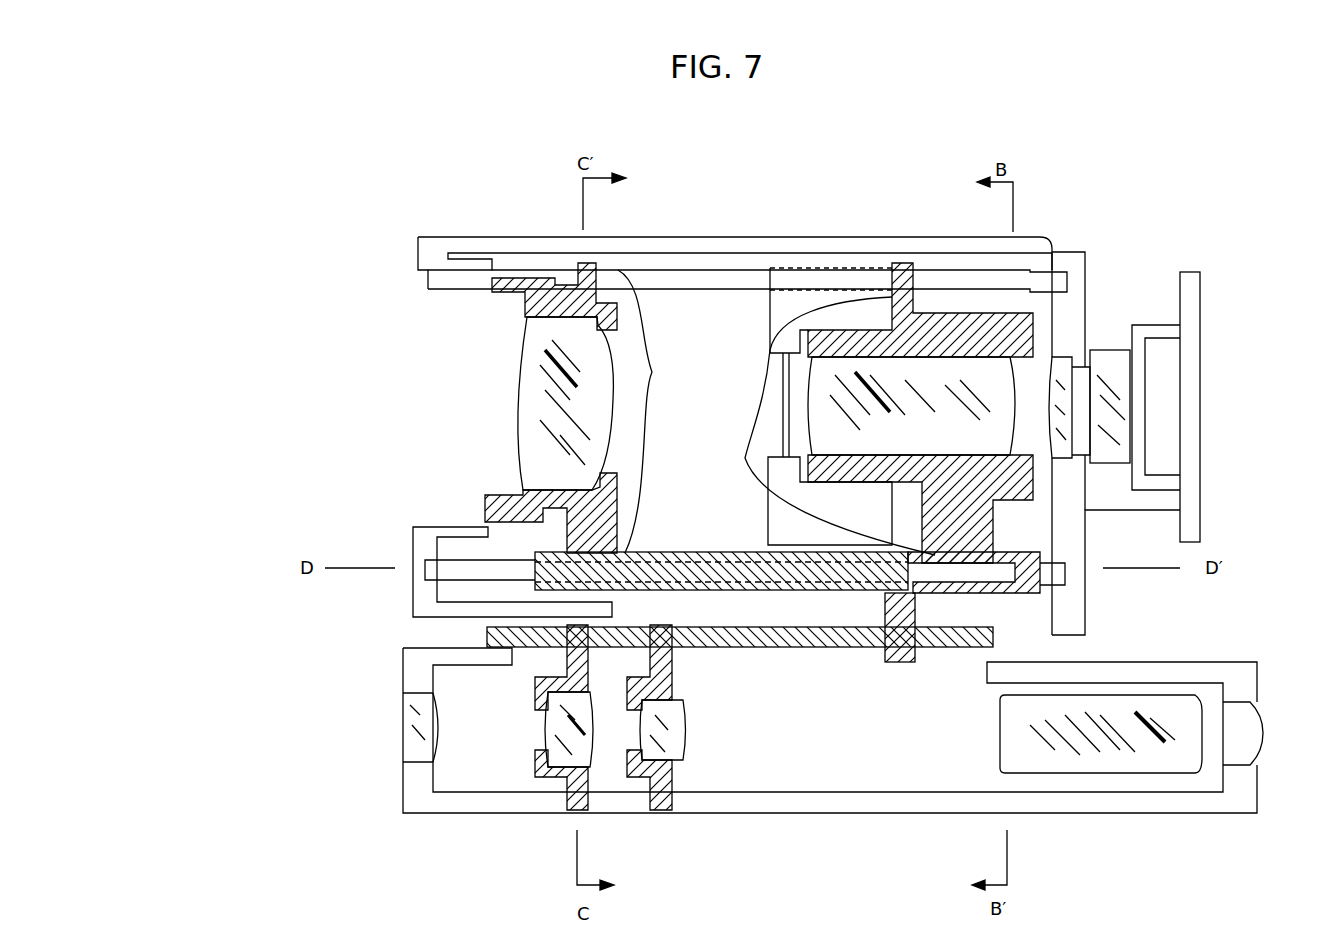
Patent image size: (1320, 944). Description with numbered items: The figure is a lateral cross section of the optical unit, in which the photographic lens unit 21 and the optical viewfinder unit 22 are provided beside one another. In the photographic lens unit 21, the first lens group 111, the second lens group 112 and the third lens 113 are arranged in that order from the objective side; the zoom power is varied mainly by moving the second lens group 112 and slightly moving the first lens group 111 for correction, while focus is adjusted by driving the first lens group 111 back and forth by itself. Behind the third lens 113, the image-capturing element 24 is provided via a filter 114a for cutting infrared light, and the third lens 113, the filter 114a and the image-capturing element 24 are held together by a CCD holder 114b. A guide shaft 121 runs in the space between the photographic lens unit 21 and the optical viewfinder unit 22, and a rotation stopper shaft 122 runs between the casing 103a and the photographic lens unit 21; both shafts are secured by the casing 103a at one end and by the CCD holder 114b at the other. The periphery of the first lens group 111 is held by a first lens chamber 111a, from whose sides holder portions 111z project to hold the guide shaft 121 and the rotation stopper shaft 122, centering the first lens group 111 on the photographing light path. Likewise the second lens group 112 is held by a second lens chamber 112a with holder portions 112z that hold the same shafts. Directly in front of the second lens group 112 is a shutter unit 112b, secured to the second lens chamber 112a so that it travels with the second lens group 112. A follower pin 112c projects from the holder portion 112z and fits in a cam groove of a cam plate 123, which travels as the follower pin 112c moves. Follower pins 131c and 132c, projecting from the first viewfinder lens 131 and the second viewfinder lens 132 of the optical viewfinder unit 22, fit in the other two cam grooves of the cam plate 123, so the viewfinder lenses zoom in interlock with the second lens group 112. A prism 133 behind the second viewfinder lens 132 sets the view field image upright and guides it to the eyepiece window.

The photographic lens unit 21 is at (308, 267).
The optical viewfinder unit 22 is at (342, 776).
The image-capturing element 24 is at (1170, 383).
The casing 103a is at (447, 237).
The first lens group 111 is at (515, 400).
The first lens chamber 111a is at (525, 320).
The holder portion 111z is at (666, 411).
The second lens group 112 is at (911, 406).
The second lens chamber 112a is at (940, 335).
The shutter unit 112b is at (790, 265).
The follower pin 112c is at (897, 655).
The holder portion 112z is at (814, 426).
The third lens 113 is at (1068, 355).
The filter 114a is at (1110, 360).
The CCD holder 114b is at (1070, 618).
The guide shaft 121 is at (460, 565).
The rotation stopper shaft 122 is at (700, 270).
The cam plate 123 is at (780, 640).
The first viewfinder lens 131 is at (548, 712).
The follower pin 131c is at (583, 642).
The second viewfinder lens 132 is at (678, 800).
The follower pin 132c is at (657, 645).
The prism 133 is at (1107, 755).